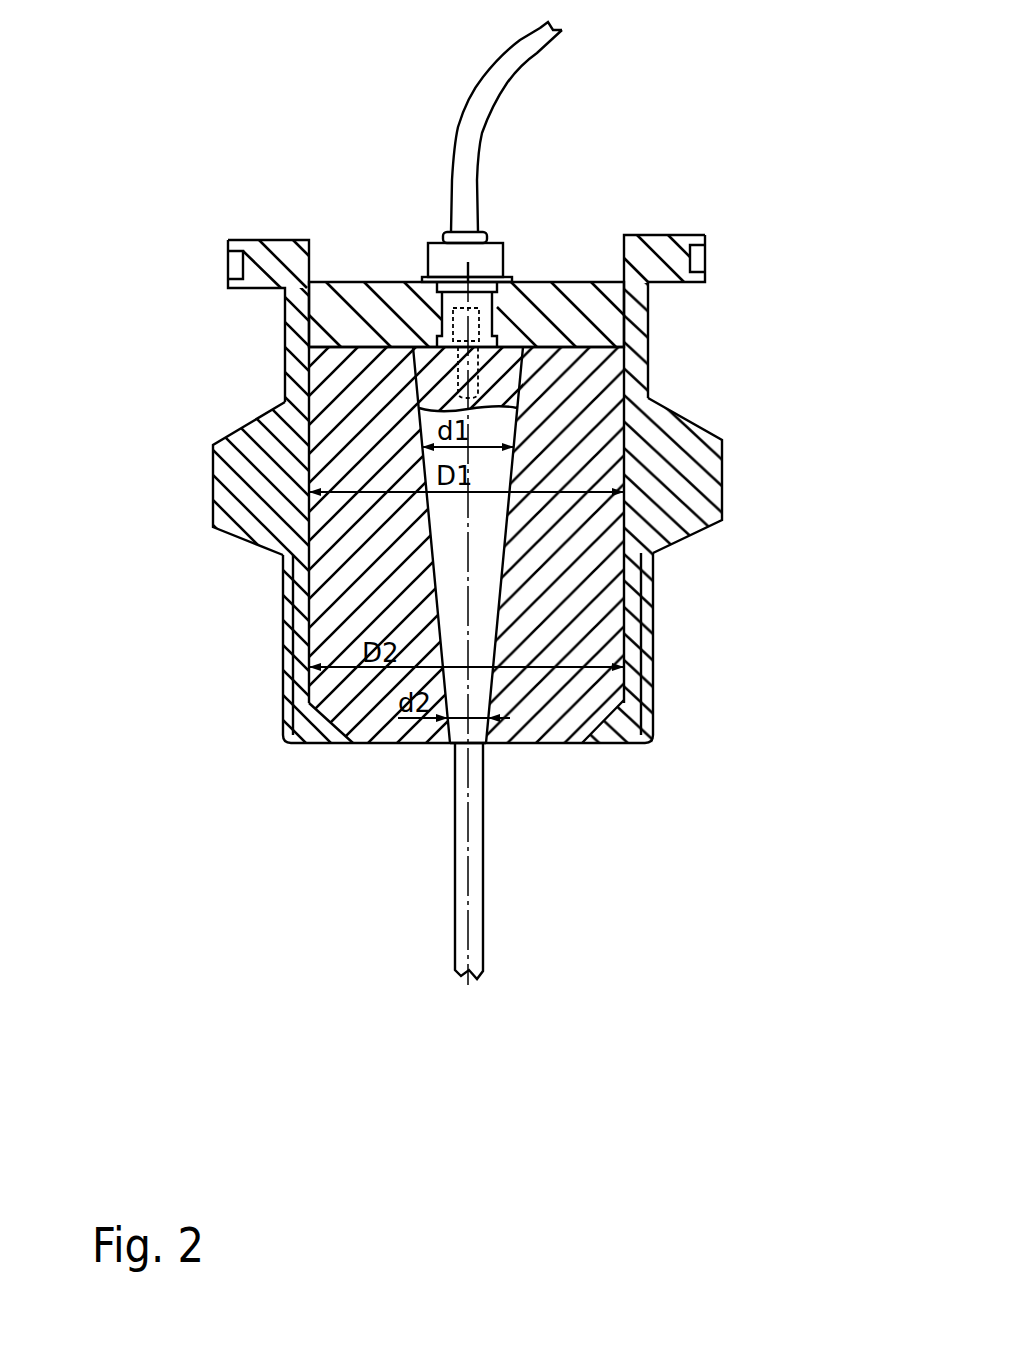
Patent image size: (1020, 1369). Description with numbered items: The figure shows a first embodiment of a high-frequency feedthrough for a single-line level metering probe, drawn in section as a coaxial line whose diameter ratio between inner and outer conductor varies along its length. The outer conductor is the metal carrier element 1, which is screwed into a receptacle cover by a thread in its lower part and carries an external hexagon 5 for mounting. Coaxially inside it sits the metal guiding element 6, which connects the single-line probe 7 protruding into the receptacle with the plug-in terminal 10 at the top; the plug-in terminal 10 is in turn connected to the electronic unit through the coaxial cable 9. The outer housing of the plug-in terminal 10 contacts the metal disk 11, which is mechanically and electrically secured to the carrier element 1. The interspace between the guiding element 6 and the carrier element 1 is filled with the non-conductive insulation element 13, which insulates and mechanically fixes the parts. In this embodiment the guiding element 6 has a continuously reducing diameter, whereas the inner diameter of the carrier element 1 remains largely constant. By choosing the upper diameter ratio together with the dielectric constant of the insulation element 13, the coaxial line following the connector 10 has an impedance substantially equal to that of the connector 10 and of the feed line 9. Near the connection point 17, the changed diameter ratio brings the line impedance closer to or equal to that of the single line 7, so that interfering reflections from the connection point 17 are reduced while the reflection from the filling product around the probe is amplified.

The carrier element 1 is at (235, 470).
The external hexagon 5 is at (208, 492).
The guiding element 6 is at (483, 553).
The single-line probe 7 is at (487, 913).
The coaxial cable 9 is at (478, 90).
The plug-in terminal 10 is at (432, 242).
The metal disk 11 is at (340, 320).
The insulation element 13 is at (340, 603).
The connection point 17 is at (485, 747).